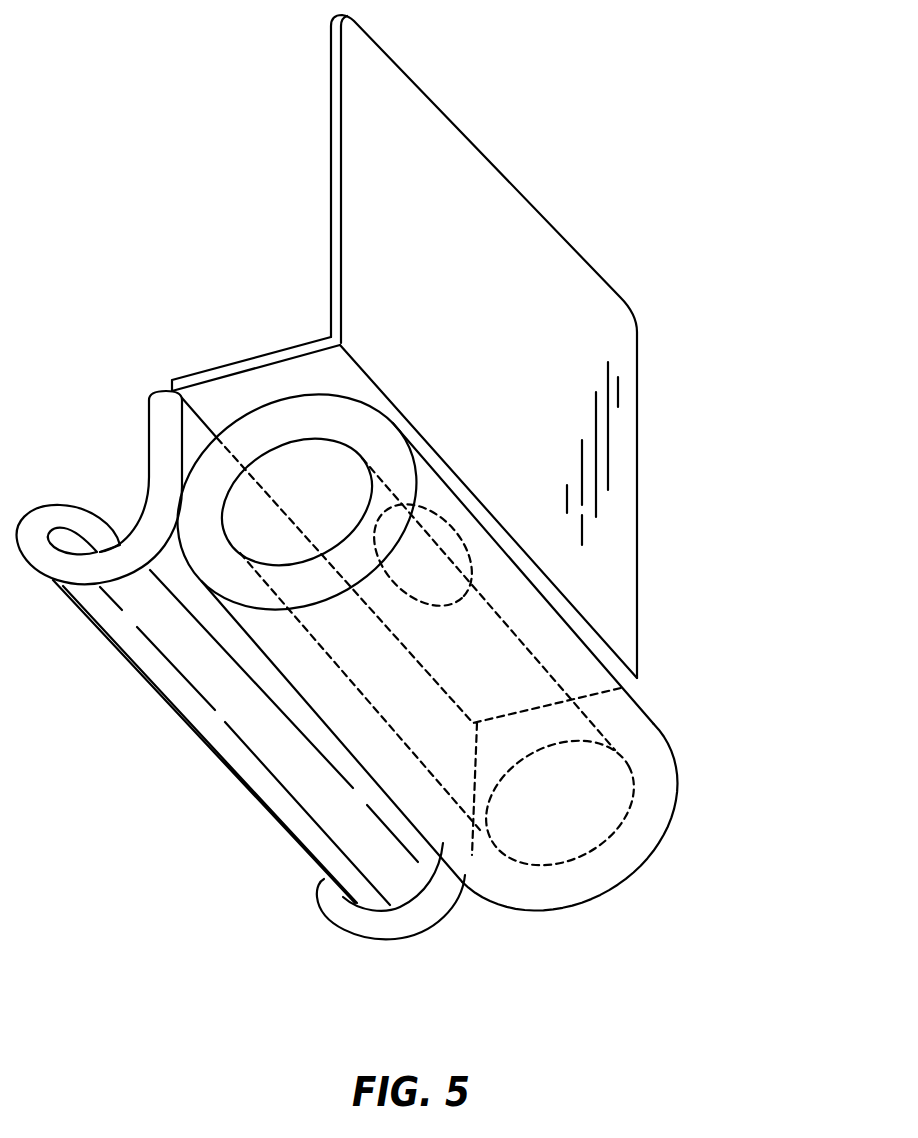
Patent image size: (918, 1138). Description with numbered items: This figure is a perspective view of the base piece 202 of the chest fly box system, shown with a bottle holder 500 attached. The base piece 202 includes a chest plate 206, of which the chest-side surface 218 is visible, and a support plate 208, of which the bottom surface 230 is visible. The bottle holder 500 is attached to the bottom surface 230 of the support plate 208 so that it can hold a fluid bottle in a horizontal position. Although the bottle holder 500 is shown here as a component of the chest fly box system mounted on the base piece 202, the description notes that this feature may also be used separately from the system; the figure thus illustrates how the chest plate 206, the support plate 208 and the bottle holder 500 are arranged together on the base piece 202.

The base piece 202 is at (547, 131).
The chest plate 206 is at (620, 297).
The support plate 208 is at (200, 371).
The chest-side surface 218 is at (517, 316).
The bottom surface 230 is at (303, 370).
The bottle holder 500 is at (657, 752).